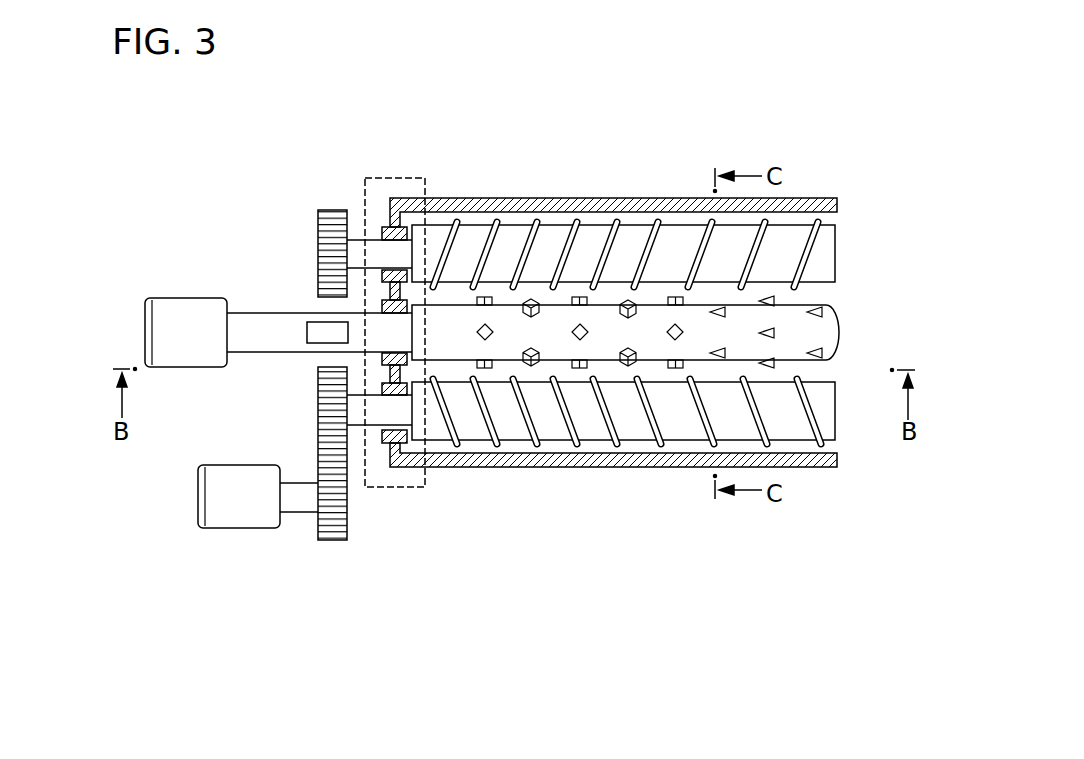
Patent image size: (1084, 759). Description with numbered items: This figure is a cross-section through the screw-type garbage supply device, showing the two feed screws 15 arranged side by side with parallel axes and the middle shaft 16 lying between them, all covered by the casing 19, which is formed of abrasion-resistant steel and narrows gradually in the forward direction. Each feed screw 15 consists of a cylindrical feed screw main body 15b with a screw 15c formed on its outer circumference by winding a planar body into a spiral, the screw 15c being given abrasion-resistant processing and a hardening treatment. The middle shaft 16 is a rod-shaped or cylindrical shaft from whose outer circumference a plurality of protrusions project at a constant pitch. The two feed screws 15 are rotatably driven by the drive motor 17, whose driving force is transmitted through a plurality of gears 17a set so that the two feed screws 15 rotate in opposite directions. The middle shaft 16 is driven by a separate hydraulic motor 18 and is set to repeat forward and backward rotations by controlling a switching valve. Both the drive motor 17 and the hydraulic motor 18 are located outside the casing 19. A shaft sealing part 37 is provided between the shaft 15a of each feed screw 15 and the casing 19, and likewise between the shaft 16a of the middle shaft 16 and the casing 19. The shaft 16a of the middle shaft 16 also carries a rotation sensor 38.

The feed screw 15 is at (622, 380).
The shaft of the feed screw 15a is at (370, 245).
The feed screw main body 15b is at (799, 428).
The screw 15c is at (708, 446).
The middle shaft 16 is at (822, 335).
The shaft of the middle shaft 16a is at (247, 345).
The drive motor 17 is at (242, 514).
The gear 17a is at (333, 218).
The hydraulic motor 18 is at (183, 354).
The casing 19 is at (598, 468).
The shaft sealing part 37 is at (395, 236).
The rotation sensor 38 is at (318, 345).